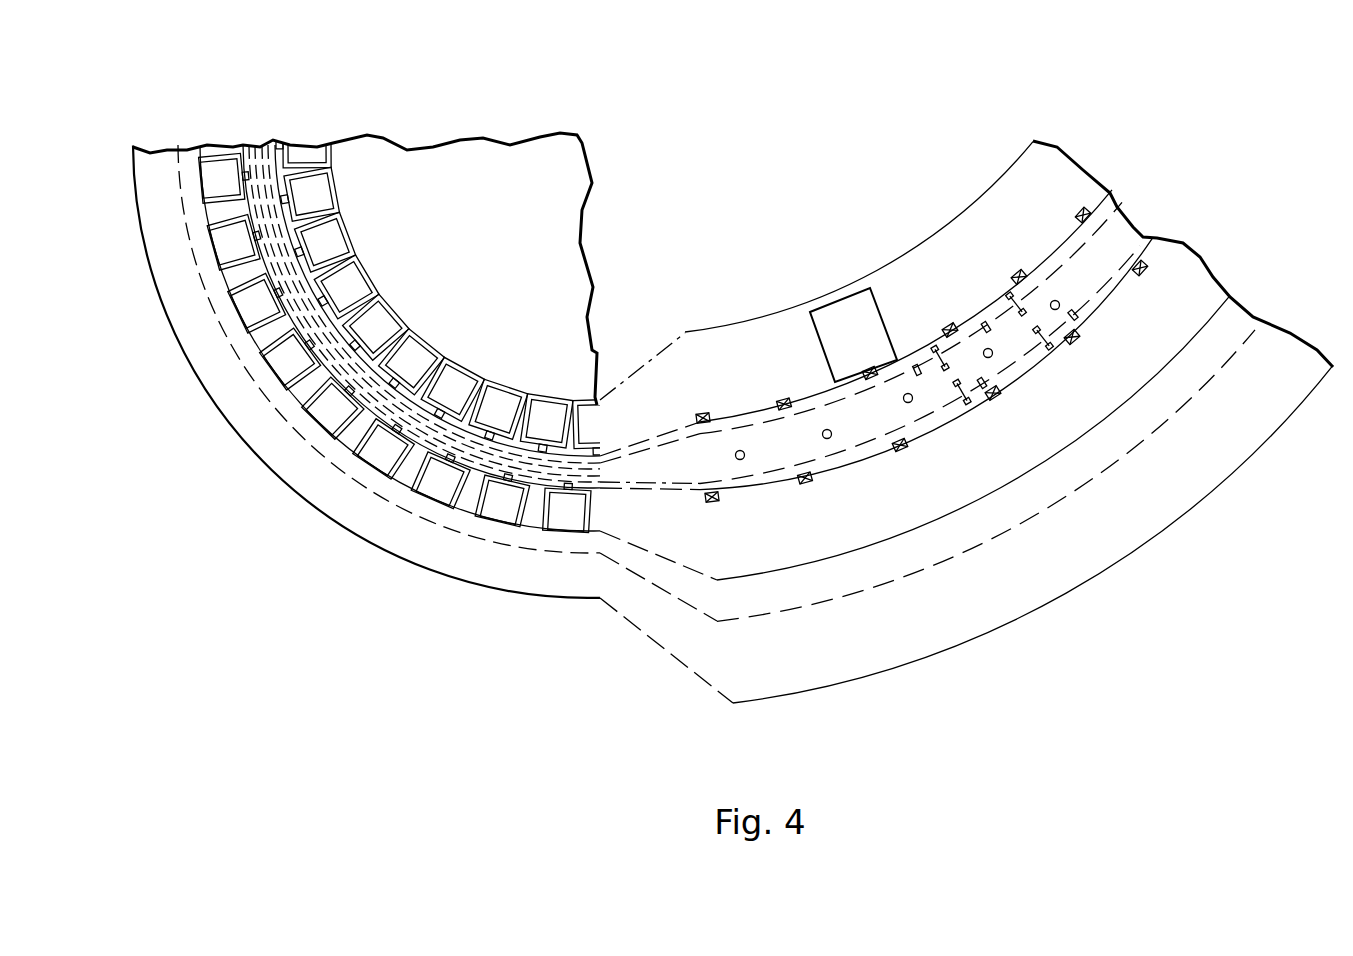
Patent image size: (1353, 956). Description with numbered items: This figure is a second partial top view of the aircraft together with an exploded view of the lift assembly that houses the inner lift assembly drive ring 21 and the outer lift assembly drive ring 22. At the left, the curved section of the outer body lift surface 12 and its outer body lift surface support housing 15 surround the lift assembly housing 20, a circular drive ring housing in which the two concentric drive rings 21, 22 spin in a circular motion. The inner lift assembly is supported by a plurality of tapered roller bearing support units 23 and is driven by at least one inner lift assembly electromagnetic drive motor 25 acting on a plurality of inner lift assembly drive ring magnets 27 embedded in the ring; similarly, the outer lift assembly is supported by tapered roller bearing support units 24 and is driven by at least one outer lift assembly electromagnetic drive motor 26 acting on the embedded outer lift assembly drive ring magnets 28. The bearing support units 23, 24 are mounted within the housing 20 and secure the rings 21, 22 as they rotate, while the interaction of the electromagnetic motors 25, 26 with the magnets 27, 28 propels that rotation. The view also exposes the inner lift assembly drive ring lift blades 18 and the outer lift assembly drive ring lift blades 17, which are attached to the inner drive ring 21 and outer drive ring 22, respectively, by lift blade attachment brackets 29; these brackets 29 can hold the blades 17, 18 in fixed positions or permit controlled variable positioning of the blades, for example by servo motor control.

The outer body lift surface 12 is at (412, 535).
The outer body lift surface support housing 15 is at (186, 160).
The outer lift assembly drive ring lift blades 17 is at (222, 172).
The inner lift assembly drive ring lift blades 18 is at (310, 195).
The lift assembly housing 20 is at (260, 150).
The inner lift assembly drive ring 21 is at (276, 150).
The outer lift assembly drive ring 22 is at (244, 150).
The tapered roller bearing support units 23 is at (934, 352).
The tapered roller bearing support units 24 is at (968, 400).
The inner lift assembly electromagnetic drive motor 25 is at (1037, 283).
The outer lift assembly electromagnetic drive motor 26 is at (1040, 335).
The inner lift assembly drive ring magnets 27 is at (983, 323).
The outer lift assembly drive ring magnets 28 is at (1073, 310).
The lift blade attachment brackets 29 is at (783, 397).